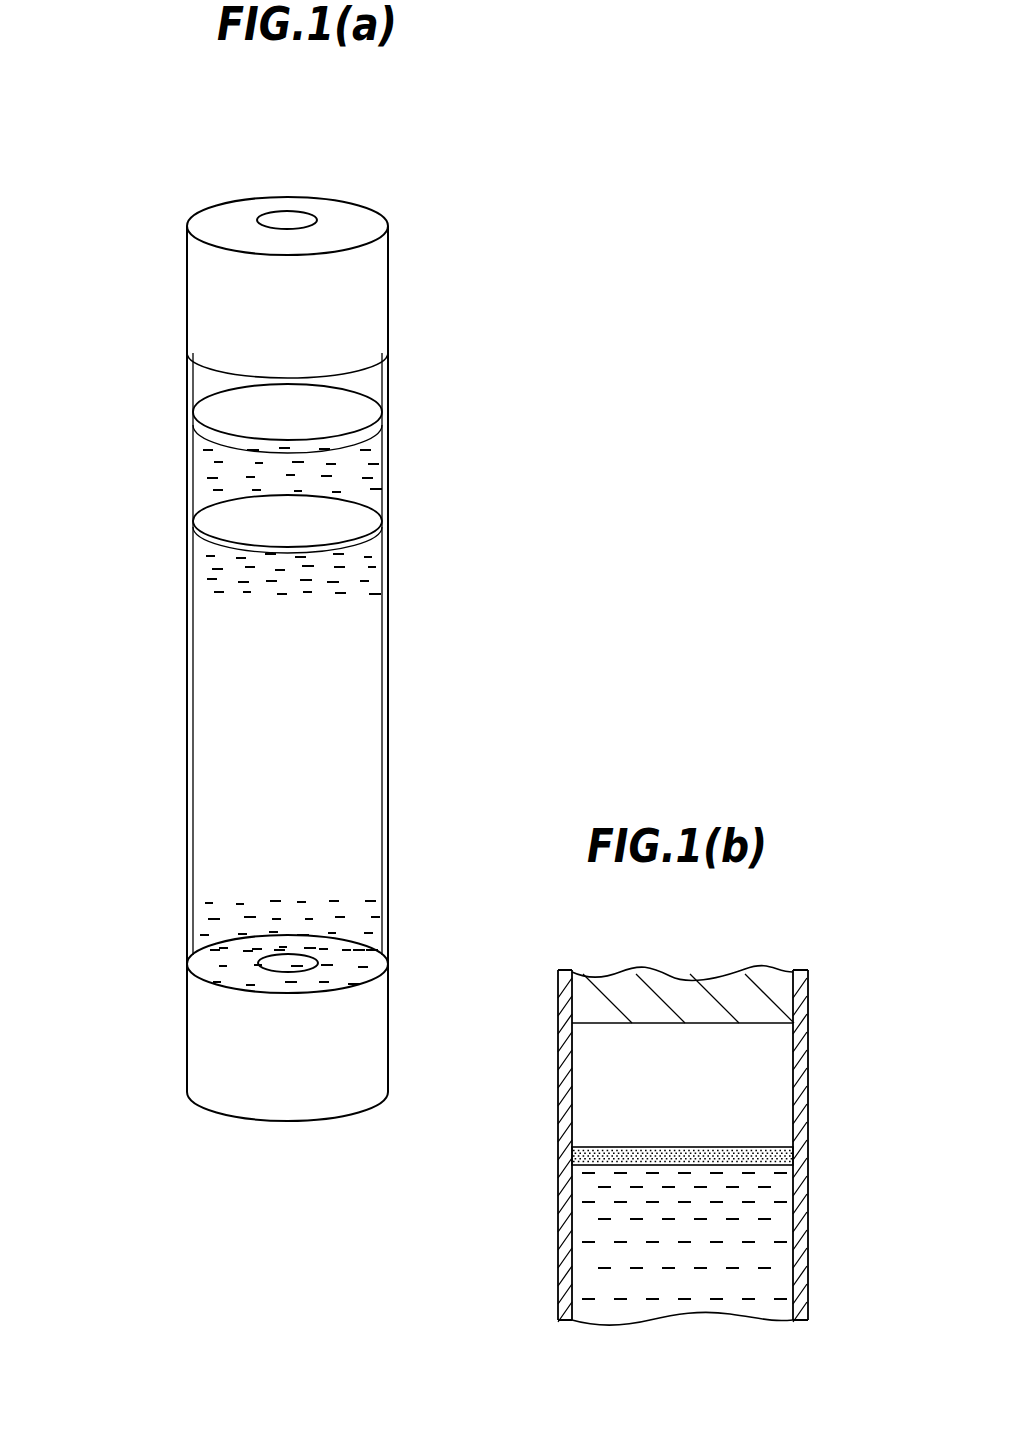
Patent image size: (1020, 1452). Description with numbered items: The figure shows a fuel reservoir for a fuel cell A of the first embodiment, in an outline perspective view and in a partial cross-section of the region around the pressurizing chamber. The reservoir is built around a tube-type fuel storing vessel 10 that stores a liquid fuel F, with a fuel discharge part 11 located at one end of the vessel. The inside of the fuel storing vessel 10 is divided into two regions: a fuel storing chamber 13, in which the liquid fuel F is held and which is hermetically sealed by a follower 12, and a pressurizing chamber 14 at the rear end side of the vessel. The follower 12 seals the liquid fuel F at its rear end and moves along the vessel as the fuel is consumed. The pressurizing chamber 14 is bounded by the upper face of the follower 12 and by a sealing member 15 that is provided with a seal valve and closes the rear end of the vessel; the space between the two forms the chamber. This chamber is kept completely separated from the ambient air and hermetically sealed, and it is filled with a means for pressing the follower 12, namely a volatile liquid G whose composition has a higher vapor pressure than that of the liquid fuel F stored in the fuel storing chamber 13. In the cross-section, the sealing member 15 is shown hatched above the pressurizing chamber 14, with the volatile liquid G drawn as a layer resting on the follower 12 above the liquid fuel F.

In FIG. 1A, the fuel reservoir for a fuel cell A is at (405, 197).
In FIG. 1A, the fuel storing vessel 10 is at (393, 685).
In FIG. 1B, the fuel storing vessel 10 is at (555, 1297).
In FIG. 1A, the fuel discharge part 11 is at (200, 1032).
In FIG. 1A, the follower 12 is at (358, 482).
In FIG. 1B, the follower 12 is at (592, 1230).
In FIG. 1A, the fuel storing chamber 13 is at (388, 753).
In FIG. 1A, the pressurizing chamber 14 is at (363, 382).
In FIG. 1B, the pressurizing chamber 14 is at (583, 1090).
In FIG. 1A, the sealing member 15 is at (370, 283).
In FIG. 1B, the sealing member 15 is at (582, 993).
In FIG. 1A, the volatile liquid G is at (218, 418).
In FIG. 1B, the volatile liquid G is at (578, 1153).
In FIG. 1A, the liquid fuel F is at (345, 818).